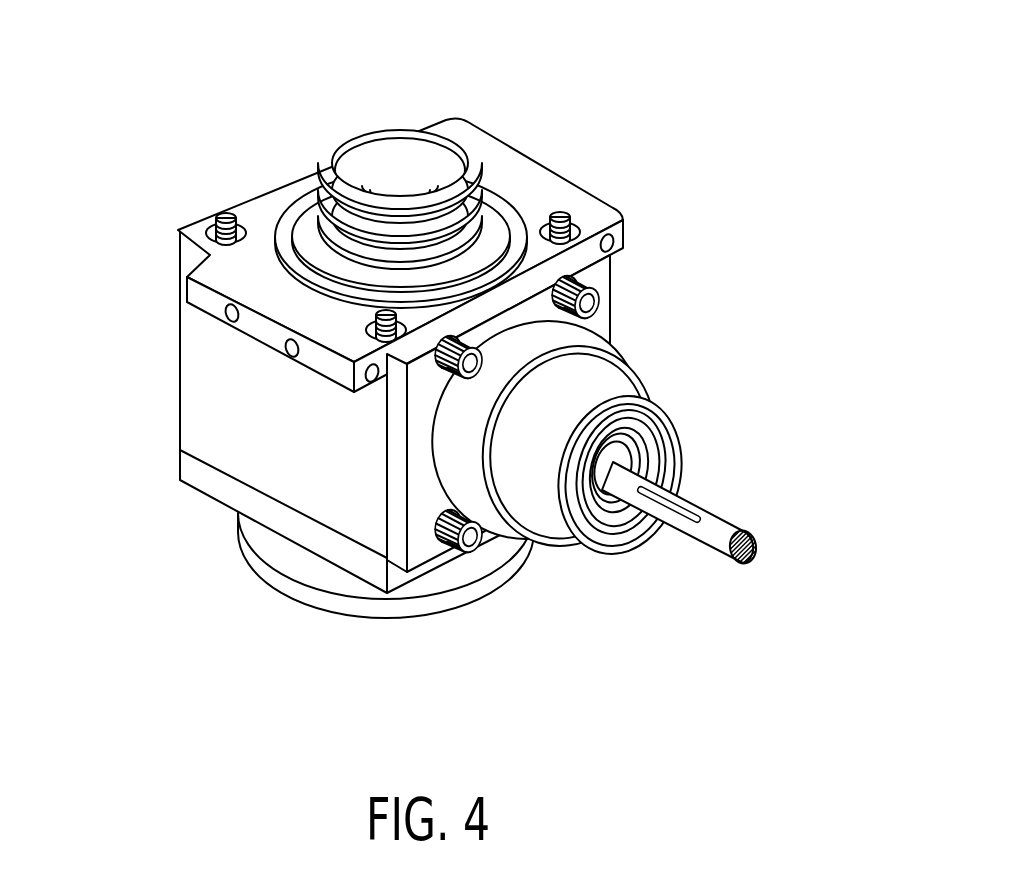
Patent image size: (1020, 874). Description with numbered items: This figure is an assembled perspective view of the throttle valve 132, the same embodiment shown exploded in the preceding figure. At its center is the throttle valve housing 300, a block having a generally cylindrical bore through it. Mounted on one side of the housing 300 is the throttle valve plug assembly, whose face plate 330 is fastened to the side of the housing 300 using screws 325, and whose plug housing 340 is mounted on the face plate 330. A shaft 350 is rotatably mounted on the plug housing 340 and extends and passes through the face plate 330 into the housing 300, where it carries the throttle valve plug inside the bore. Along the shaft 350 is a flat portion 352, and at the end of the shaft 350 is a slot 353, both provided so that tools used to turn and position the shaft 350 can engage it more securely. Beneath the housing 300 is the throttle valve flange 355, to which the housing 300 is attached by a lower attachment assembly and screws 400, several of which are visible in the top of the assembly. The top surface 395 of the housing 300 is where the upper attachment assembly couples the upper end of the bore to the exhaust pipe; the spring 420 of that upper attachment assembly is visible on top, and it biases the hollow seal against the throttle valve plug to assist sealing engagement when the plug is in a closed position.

The throttle valve 132 is at (441, 347).
The throttle valve housing 300 is at (351, 416).
The screw 325 is at (597, 414).
The face plate 330 is at (581, 378).
The plug housing 340 is at (593, 426).
The shaft 350 is at (723, 522).
The flat portion 352 is at (717, 477).
The slot 353 is at (769, 567).
The throttle valve flange 355 is at (351, 603).
The top surface 395 is at (400, 123).
The screws 400 is at (359, 299).
The spring 420 is at (284, 199).